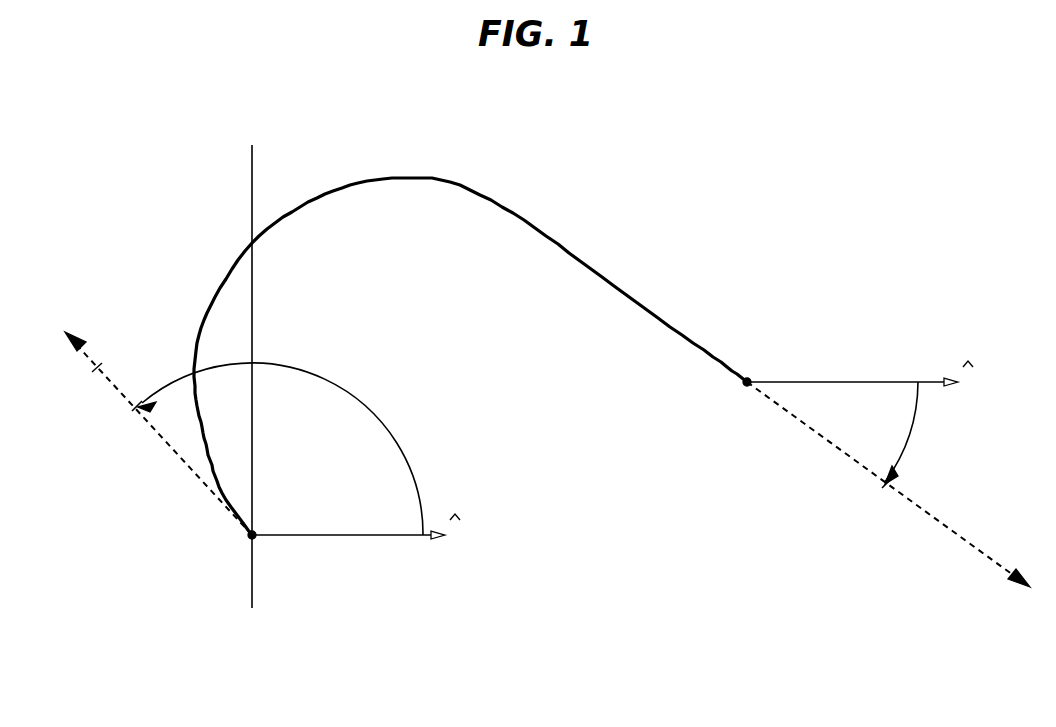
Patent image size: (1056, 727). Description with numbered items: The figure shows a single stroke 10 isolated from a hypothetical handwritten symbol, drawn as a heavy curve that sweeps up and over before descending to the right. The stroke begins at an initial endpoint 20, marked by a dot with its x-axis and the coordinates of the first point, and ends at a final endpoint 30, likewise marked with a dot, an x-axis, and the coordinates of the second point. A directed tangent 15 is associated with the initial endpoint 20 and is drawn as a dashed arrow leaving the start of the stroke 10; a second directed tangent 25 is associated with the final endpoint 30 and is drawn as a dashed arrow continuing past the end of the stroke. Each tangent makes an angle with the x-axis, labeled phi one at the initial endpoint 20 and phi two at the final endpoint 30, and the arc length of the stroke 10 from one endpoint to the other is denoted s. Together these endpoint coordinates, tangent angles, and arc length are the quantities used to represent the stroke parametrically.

The stroke 10 is at (335, 173).
The directed tangent 15 is at (97, 368).
The initial endpoint 20 is at (250, 537).
The directed tangent 25 is at (912, 505).
The final endpoint 30 is at (752, 378).